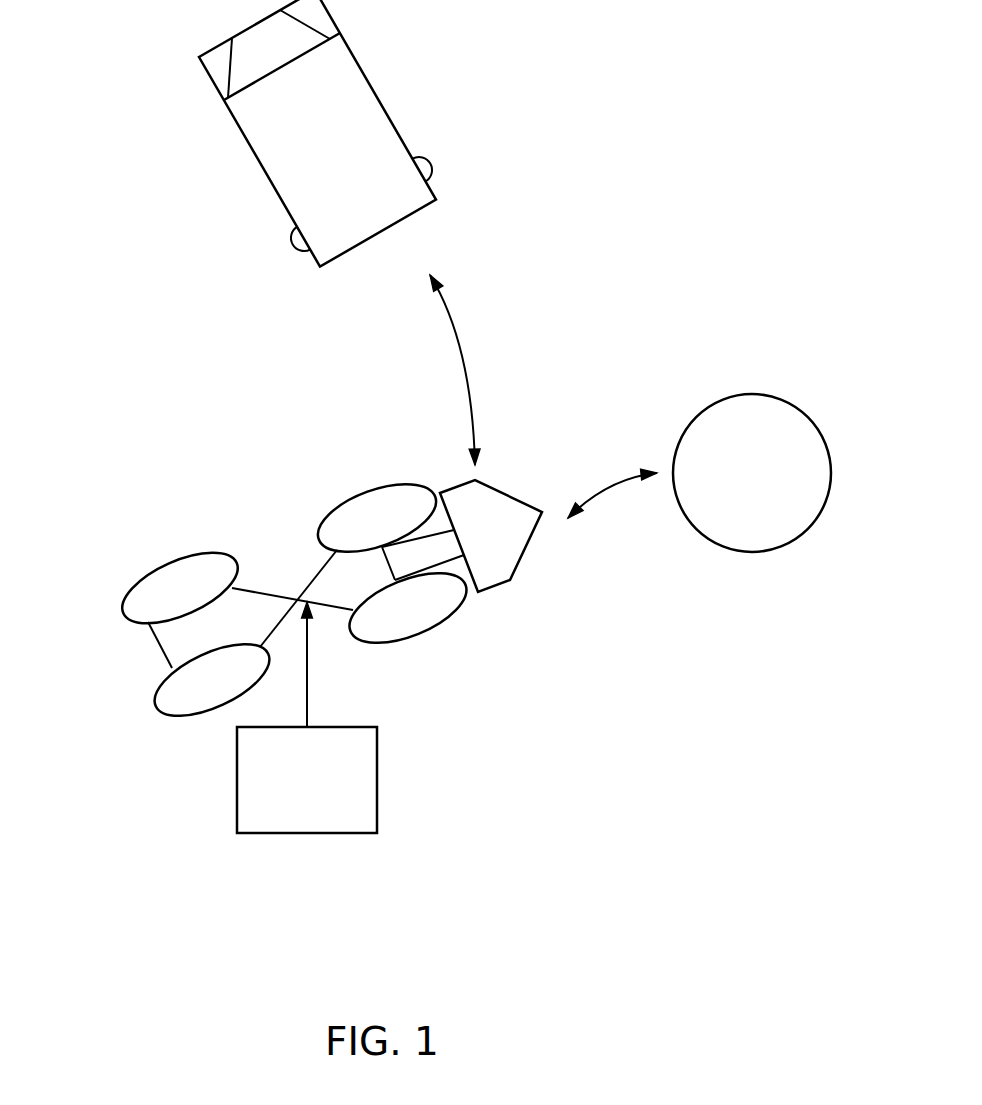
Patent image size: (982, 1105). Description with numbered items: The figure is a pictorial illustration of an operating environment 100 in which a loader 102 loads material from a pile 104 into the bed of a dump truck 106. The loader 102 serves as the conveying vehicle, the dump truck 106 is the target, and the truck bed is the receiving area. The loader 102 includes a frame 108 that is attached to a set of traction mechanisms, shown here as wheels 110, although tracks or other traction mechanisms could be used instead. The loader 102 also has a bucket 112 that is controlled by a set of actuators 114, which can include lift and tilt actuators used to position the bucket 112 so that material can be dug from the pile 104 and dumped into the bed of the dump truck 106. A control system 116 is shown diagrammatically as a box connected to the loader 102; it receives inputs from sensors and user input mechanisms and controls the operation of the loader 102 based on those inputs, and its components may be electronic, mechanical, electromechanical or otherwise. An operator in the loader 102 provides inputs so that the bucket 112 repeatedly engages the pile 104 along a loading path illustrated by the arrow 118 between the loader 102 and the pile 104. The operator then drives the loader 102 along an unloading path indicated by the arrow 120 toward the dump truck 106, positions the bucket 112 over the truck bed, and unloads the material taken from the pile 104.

The environment 100 is at (108, 298).
The loader 102 is at (333, 602).
The pile 104 is at (752, 395).
The dump truck 106 is at (395, 115).
The frame 108 is at (313, 573).
The wheels 110 is at (347, 502).
The bucket 112 is at (517, 568).
The actuators 114 is at (445, 530).
The control system 116 is at (378, 782).
The arrow indicating loading path 118 is at (590, 497).
The arrow indicating unloading path 120 is at (460, 357).